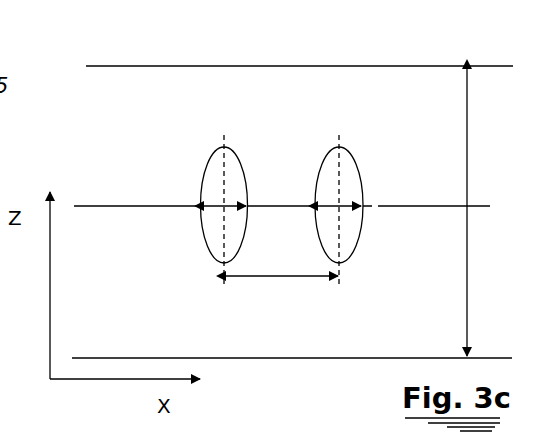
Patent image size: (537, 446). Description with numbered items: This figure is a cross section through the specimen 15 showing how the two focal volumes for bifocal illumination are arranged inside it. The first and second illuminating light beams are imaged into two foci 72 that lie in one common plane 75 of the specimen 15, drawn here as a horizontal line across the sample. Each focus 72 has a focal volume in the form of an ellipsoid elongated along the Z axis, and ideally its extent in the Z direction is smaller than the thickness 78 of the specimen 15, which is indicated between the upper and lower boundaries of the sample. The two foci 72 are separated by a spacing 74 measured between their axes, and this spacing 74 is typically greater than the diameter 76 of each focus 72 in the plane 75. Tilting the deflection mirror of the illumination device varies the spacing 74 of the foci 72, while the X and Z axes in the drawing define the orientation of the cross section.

The specimen 15 is at (344, 66).
The foci 72 is at (214, 148).
The spacing 74 is at (281, 301).
The plane 75 is at (125, 207).
The diameter 76 is at (221, 208).
The thickness 78 is at (468, 168).